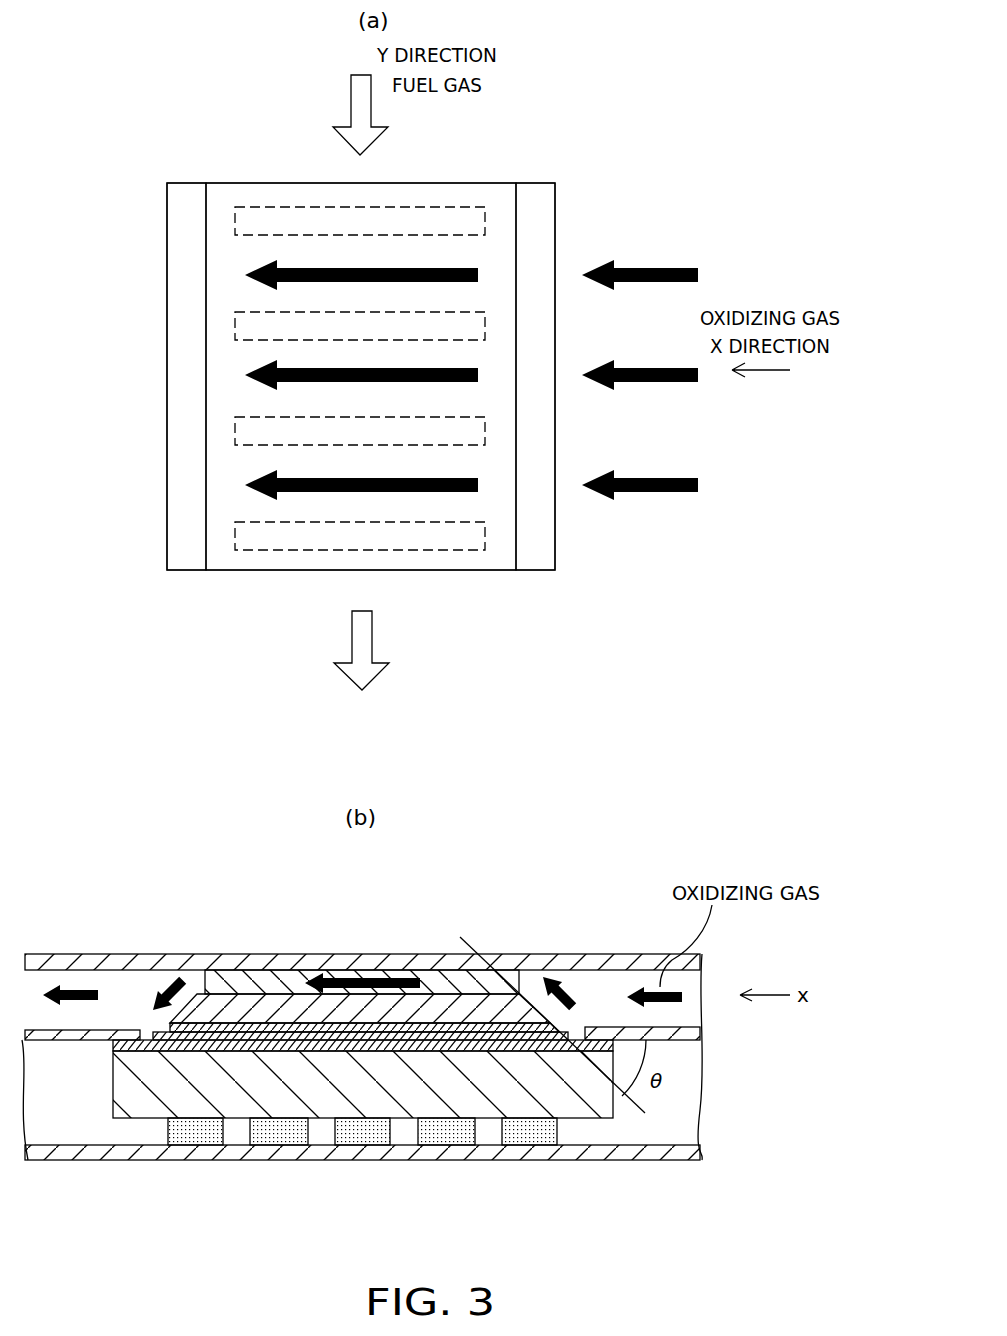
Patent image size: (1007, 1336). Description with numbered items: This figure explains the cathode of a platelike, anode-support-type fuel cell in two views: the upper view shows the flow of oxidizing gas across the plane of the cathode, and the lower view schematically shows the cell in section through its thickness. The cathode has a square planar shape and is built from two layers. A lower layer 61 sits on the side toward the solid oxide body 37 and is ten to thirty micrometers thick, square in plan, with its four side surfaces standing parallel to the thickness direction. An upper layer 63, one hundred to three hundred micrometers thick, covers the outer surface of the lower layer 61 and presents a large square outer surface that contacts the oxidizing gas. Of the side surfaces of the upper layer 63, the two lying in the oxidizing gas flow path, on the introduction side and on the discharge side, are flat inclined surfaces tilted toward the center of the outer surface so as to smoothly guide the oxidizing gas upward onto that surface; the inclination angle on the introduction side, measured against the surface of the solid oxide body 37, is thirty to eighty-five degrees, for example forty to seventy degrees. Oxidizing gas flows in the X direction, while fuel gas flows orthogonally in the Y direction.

The solid electrolyte (solid oxide body) 37 is at (403, 1048).
The lower layer 61 is at (460, 1027).
The upper layer 63 is at (433, 1000).